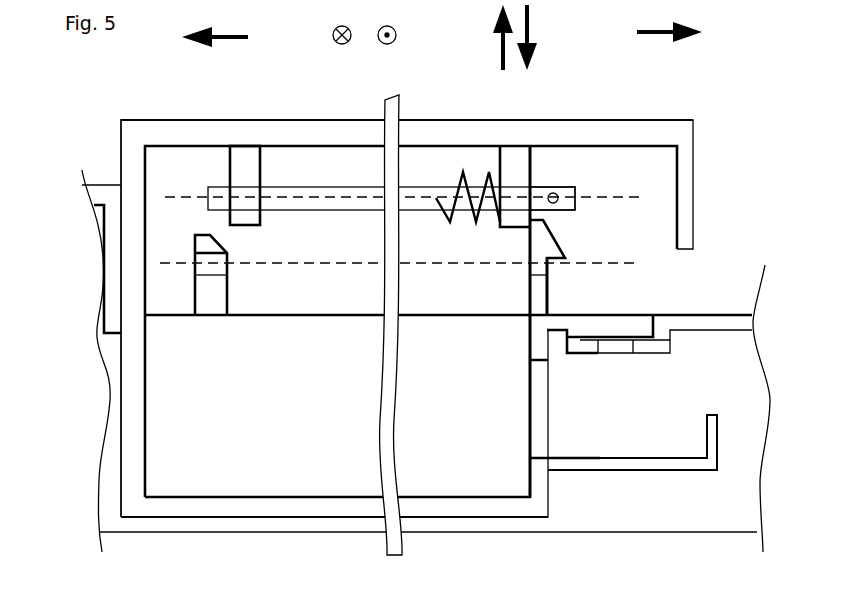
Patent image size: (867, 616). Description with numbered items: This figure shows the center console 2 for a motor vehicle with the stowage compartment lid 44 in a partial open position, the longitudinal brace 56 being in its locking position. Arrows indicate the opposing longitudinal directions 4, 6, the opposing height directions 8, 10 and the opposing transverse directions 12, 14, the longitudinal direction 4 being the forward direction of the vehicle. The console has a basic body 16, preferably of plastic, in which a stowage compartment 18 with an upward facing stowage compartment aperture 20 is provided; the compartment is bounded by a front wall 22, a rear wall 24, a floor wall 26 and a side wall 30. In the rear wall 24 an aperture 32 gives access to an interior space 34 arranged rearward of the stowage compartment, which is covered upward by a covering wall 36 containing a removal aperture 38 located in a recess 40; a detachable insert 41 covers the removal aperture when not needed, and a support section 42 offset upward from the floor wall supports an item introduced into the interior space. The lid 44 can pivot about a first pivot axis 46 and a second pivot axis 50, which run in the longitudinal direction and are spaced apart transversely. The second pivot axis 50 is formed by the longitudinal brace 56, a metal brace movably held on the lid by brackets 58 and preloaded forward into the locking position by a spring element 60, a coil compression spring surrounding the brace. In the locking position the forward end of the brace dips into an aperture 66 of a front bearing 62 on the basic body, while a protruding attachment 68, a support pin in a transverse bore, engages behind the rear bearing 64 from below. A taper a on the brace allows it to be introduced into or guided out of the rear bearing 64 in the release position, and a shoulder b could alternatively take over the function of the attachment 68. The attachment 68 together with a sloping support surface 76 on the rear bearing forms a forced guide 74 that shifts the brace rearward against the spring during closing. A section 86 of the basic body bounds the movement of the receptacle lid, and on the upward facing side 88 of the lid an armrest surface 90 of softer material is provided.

The center console 2 is at (719, 152).
The longitudinal direction 4 is at (228, 34).
The longitudinal direction 6 is at (650, 35).
The height direction 8 is at (500, 52).
The height direction 10 is at (530, 32).
The transverse direction 12 is at (397, 33).
The transverse direction 14 is at (333, 34).
The basic body 16 is at (652, 533).
The stowage compartment 18 is at (160, 402).
The stowage compartment aperture 20 is at (292, 318).
The front wall 22 is at (133, 437).
The rear wall 24 is at (538, 432).
The floor wall 26 is at (267, 507).
The side wall 30 is at (178, 453).
The aperture 32 is at (542, 485).
The interior space 34 is at (630, 417).
The covering wall 36 is at (707, 323).
The removal aperture 38 is at (620, 345).
The recess 40 is at (645, 313).
The insert 41 is at (668, 337).
The support section 42 is at (635, 465).
The stowage compartment lid 44 is at (703, 197).
The first pivot axis 46 is at (172, 263).
The second pivot axis 50 is at (177, 197).
The longitudinal brace 56 is at (318, 185).
The brackets 58 is at (248, 163).
The spring element 60 is at (460, 172).
The front bearing 62 is at (205, 295).
The rear bearing 64 is at (549, 290).
The aperture 66 is at (197, 268).
The protruding attachment 68 is at (552, 190).
The forced guide 74 is at (576, 237).
The sloping support surface 76 is at (556, 224).
The section 86 is at (113, 227).
The side 88 is at (207, 118).
The armrest surface 90 is at (227, 118).
The taper a is at (512, 193).
The shoulder b is at (525, 193).